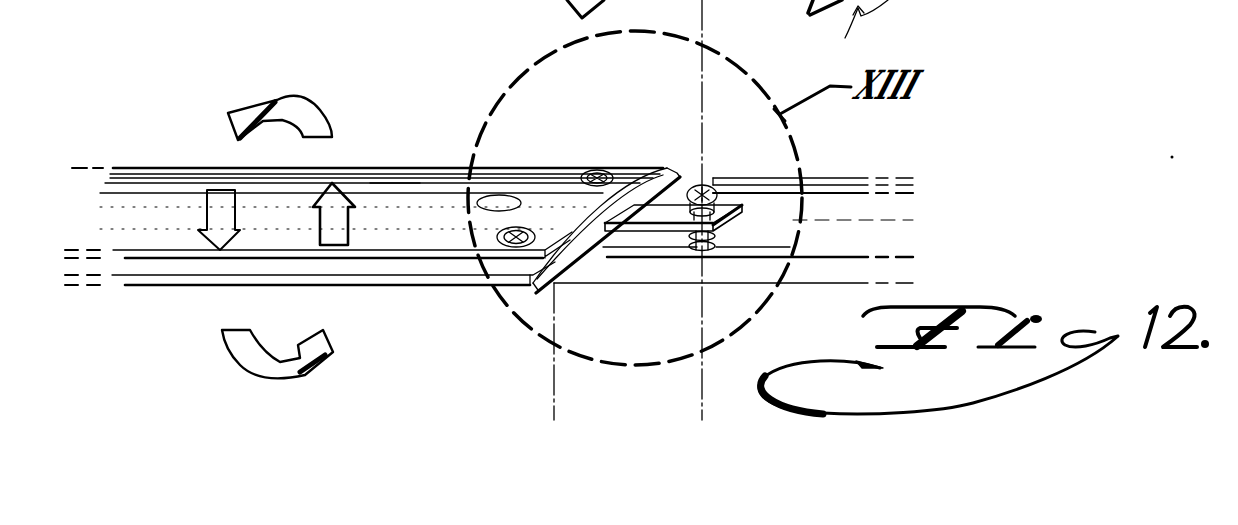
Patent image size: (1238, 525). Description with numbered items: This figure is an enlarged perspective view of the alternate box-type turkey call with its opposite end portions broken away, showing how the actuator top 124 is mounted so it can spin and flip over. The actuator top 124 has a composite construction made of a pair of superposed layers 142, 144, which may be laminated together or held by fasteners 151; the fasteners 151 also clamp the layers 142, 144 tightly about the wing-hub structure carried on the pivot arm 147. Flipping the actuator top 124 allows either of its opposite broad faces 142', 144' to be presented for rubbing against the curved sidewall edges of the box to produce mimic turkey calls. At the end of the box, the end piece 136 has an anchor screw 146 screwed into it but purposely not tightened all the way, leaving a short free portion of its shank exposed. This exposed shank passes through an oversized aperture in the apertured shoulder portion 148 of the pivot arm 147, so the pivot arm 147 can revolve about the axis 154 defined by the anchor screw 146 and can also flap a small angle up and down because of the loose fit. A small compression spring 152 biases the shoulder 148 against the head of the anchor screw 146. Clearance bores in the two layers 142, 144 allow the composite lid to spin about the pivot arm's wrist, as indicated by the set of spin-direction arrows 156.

The actuator top 124 is at (177, 141).
The layer 142 is at (390, 171).
The broad face 142' is at (391, 149).
The fasteners 151 is at (597, 175).
The layer 144 is at (333, 294).
The broad face 144' is at (327, 308).
The end piece 136 is at (600, 263).
The anchor screw 146 is at (718, 187).
The pivot arm 147 is at (722, 191).
The apertured shoulder portion 148 is at (667, 230).
The compression spring 152 is at (720, 235).
The axis 154 is at (703, 377).
The spin-direction arrows 156 is at (323, 344).